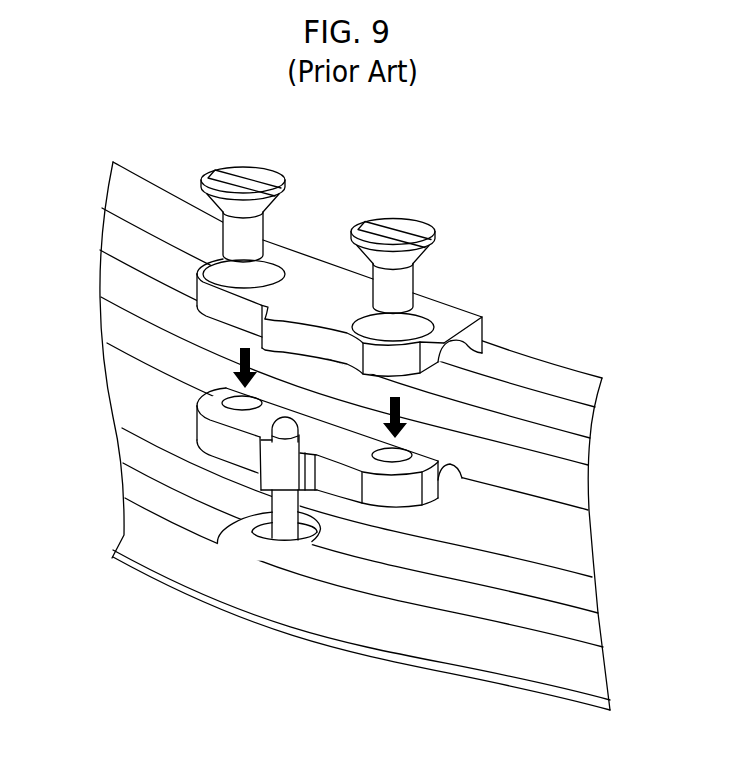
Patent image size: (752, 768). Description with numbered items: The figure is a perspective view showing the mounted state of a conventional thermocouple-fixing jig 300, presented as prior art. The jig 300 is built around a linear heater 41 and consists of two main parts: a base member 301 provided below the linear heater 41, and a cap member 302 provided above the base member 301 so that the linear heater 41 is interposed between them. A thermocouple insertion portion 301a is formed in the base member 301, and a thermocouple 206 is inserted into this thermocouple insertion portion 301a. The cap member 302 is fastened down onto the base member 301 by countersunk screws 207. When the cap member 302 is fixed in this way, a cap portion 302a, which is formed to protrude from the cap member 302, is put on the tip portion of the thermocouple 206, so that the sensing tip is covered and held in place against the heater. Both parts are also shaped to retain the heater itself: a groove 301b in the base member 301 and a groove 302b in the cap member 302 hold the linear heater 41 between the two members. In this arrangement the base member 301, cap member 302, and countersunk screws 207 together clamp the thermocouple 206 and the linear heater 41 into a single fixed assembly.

The linear heater 41 is at (578, 489).
The thermocouple 206 is at (217, 541).
The countersunk screws 207 is at (272, 166).
The conventional thermocouple-fixing jig 300 is at (528, 240).
The base member 301 is at (263, 552).
The thermocouple insertion portion 301a is at (258, 478).
The groove 301b is at (440, 478).
The cap member 302 is at (324, 308).
The cap portion 302a is at (258, 341).
The groove 302b is at (484, 348).